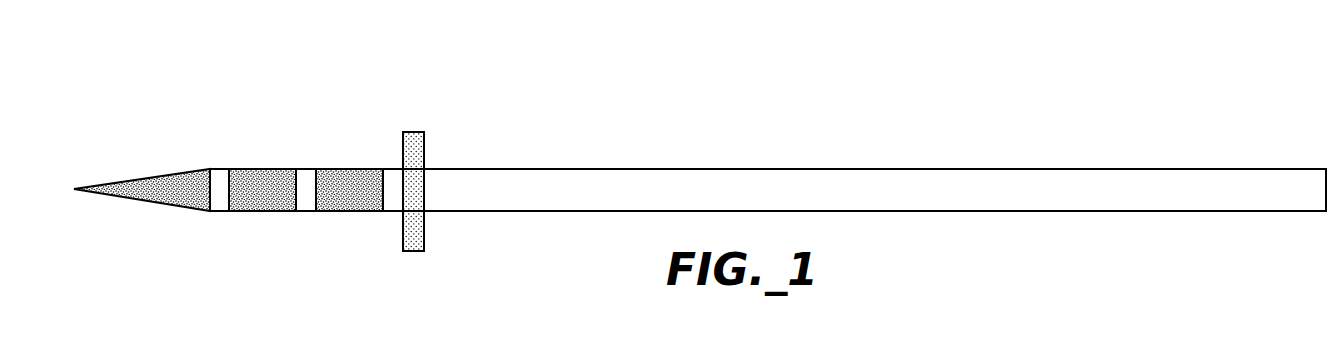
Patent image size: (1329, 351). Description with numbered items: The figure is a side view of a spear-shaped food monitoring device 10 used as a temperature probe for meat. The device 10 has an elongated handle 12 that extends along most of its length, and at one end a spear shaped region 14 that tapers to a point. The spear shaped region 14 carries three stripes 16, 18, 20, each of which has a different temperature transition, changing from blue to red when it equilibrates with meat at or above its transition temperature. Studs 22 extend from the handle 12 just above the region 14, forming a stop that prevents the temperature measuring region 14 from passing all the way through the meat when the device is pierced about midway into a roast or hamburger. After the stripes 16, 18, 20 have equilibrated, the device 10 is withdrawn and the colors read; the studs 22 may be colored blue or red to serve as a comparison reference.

The food monitoring device 10 is at (601, 74).
The elongated handle 12 is at (785, 168).
The spear shaped region 14 is at (338, 131).
The first stripe 16 is at (157, 208).
The second stripe 18 is at (250, 215).
The third stripe 20 is at (345, 215).
The studs 22 is at (413, 252).